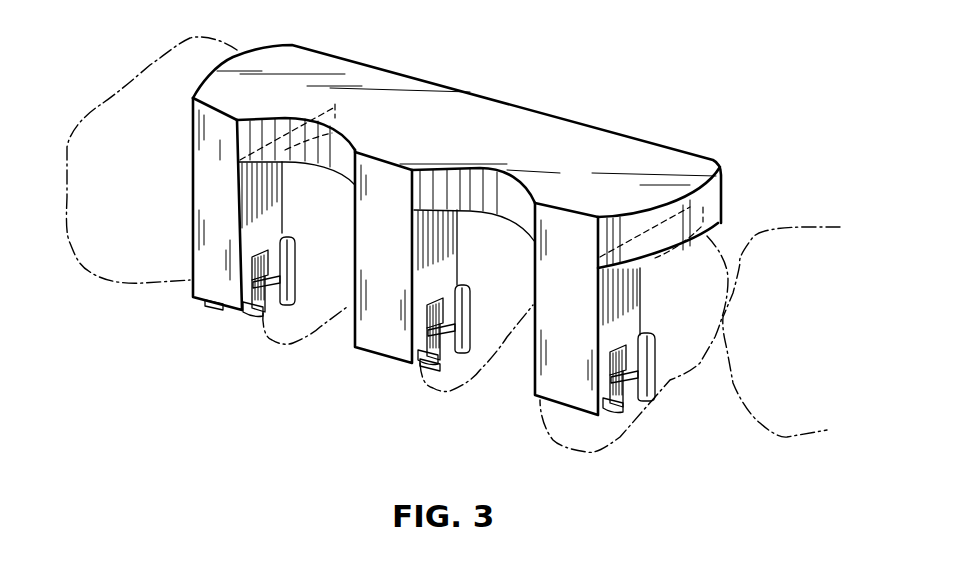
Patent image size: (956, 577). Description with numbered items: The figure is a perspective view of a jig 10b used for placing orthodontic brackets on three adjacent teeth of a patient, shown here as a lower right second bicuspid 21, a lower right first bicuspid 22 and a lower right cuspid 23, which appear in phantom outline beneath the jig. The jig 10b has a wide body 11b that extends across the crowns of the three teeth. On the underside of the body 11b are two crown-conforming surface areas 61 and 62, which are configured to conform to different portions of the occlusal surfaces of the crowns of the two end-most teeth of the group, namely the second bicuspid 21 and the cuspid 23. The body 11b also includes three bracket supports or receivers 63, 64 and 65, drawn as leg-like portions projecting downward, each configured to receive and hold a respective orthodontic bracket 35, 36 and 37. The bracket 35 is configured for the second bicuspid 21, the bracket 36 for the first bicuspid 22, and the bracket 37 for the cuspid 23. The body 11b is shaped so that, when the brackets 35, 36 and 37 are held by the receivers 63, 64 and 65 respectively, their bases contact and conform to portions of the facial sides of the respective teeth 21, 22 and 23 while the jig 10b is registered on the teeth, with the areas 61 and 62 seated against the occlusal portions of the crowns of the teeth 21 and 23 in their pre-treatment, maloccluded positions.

The jig 10b is at (525, 79).
The wide body 11b is at (463, 137).
The crown-conforming surface area 61 is at (285, 167).
The crown-conforming surface area 62 is at (640, 267).
The bracket support or receiver 63 is at (230, 214).
The bracket support or receiver 64 is at (396, 263).
The bracket support or receiver 65 is at (581, 319).
The orthodontic bracket 35 is at (297, 262).
The orthodontic bracket 36 is at (470, 323).
The orthodontic bracket 37 is at (657, 370).
The lower right second bicuspid 21 is at (293, 347).
The lower right first bicuspid 22 is at (443, 393).
The lower right cuspid 23 is at (573, 453).